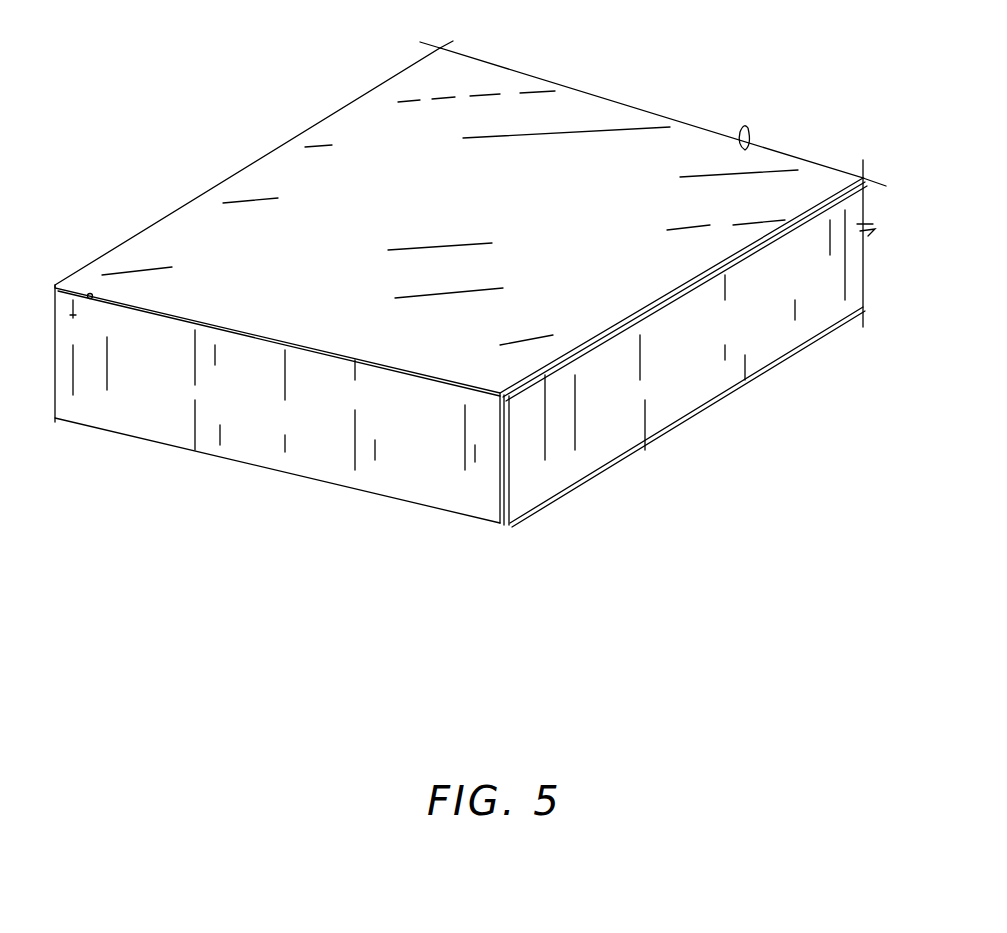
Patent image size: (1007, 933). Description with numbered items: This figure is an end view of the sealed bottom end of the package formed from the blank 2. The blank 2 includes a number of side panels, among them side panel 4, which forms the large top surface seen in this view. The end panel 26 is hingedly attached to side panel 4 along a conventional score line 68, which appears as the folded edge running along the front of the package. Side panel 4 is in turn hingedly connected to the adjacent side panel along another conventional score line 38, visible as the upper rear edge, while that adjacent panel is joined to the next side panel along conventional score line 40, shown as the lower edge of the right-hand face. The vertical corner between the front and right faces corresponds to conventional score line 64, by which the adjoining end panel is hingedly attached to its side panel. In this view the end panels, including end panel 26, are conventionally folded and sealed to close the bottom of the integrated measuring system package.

The blank 2 is at (363, 582).
The side panel 4 is at (458, 217).
The end panel 26 is at (260, 418).
The score line 38 is at (700, 280).
The score line 40 is at (762, 362).
The score line 64 is at (508, 465).
The score line 68 is at (313, 350).